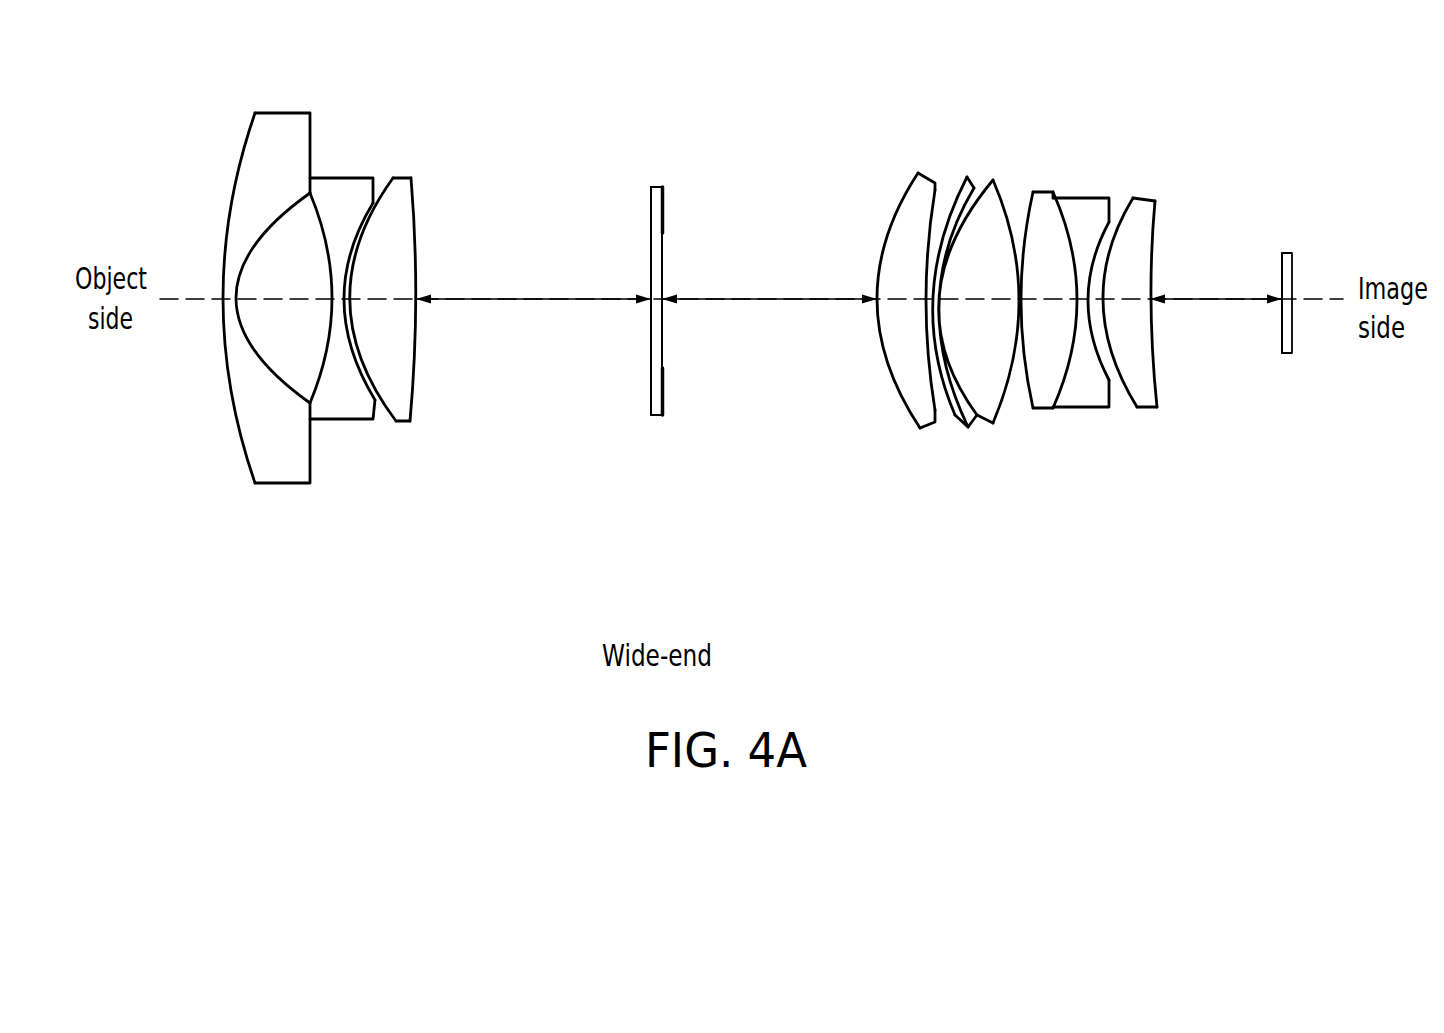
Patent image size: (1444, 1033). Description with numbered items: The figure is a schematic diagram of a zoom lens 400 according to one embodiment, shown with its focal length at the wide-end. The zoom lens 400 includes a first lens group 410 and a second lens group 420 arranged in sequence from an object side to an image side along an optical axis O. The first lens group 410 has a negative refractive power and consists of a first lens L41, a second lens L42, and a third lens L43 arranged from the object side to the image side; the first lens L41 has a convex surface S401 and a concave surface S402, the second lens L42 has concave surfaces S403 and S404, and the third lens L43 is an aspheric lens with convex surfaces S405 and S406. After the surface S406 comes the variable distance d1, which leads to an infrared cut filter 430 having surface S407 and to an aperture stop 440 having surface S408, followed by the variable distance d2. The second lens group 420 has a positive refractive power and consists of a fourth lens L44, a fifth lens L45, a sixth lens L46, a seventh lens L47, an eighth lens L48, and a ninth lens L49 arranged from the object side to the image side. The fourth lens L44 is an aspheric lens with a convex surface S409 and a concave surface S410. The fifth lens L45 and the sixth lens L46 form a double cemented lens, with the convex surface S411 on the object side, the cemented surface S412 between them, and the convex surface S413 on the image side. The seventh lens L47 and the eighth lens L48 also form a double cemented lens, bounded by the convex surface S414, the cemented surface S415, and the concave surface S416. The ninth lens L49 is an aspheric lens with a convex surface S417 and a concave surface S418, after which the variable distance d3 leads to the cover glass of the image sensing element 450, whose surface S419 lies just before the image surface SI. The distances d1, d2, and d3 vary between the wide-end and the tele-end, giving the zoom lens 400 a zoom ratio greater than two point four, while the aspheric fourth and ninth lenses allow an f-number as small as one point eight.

The zoom lens 400 is at (1414, 688).
The first lens group 410 is at (402, 46).
The second lens group 420 is at (1190, 84).
The infrared cut filter 430 is at (651, 205).
The aperture stop 440 is at (663, 199).
The cover glass image sensing element 450 is at (1293, 270).
The image surface SI is at (1281, 262).
The optical axis O is at (201, 297).
The variable distance d1 is at (533, 280).
The variable distance d2 is at (769, 282).
The variable distance d3 is at (1216, 285).
The first lens L41 is at (277, 132).
The second lens L42 is at (342, 193).
The third lens L43 is at (402, 192).
The fourth lens L44 is at (907, 218).
The fifth lens L45 is at (968, 182).
The sixth lens L46 is at (992, 205).
The seventh lens L47 is at (1045, 207).
The eighth lens L48 is at (1088, 212).
The ninth lens L49 is at (1145, 210).
The surface S401 is at (242, 440).
The surface S402 is at (256, 358).
The surface S403 is at (326, 330).
The surface S404 is at (356, 360).
The surface S405 is at (366, 208).
The surface S406 is at (417, 343).
The surface S407 is at (650, 383).
The surface S408 is at (664, 397).
The surface S409 is at (897, 397).
The surface S410 is at (928, 345).
The surface S411 is at (934, 386).
The surface S412 is at (948, 358).
The surface S413 is at (1022, 337).
The surface S414 is at (996, 412).
The surface S415 is at (1061, 392).
The surface S416 is at (1102, 362).
The surface S417 is at (1115, 242).
The surface S418 is at (1153, 348).
The surface S419 is at (1282, 333).